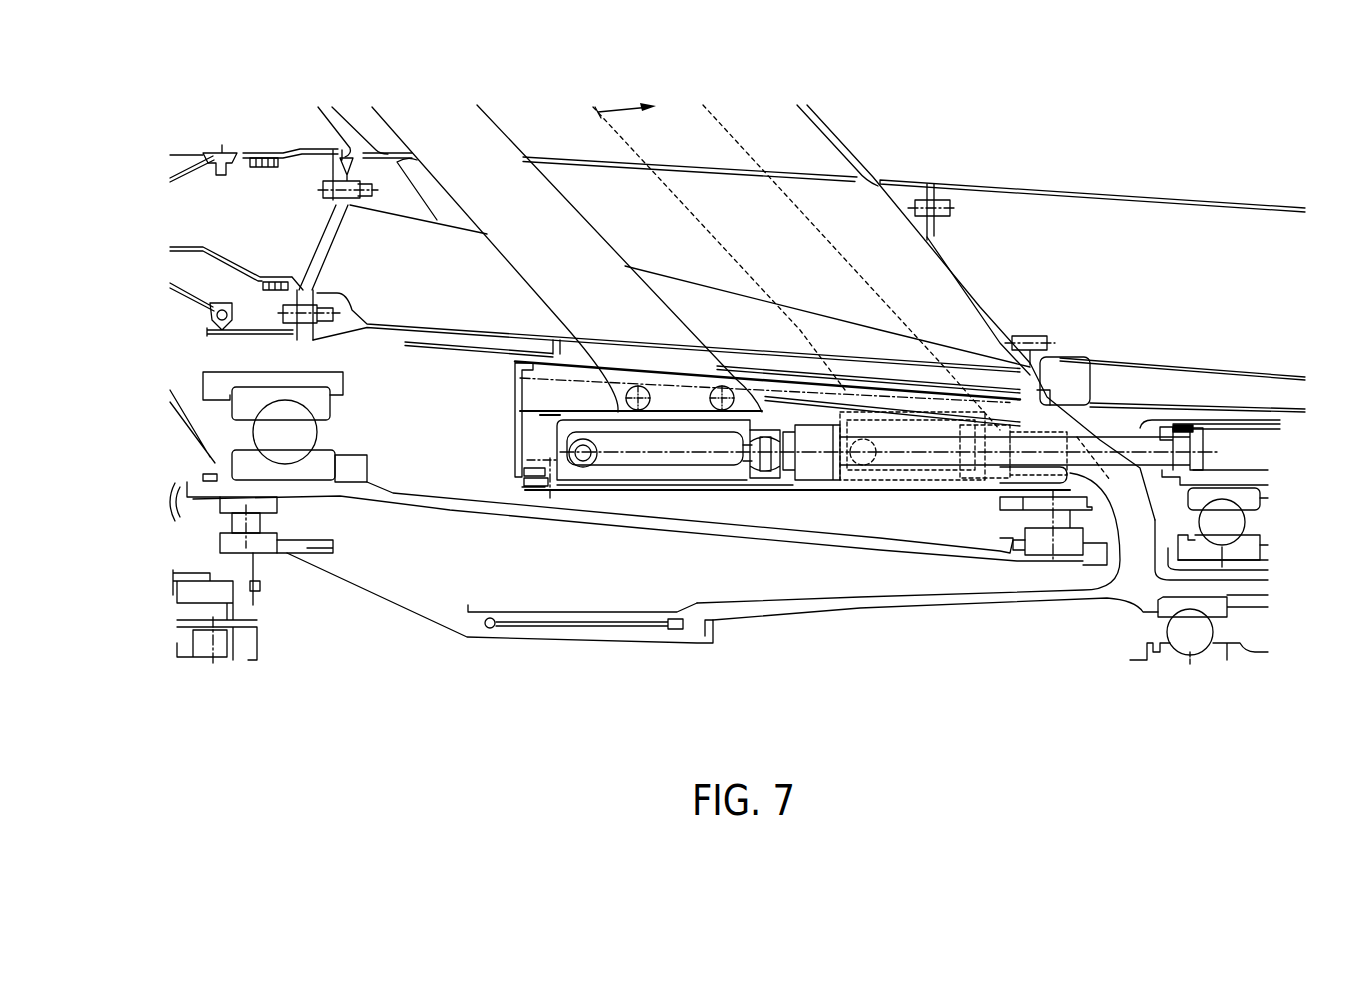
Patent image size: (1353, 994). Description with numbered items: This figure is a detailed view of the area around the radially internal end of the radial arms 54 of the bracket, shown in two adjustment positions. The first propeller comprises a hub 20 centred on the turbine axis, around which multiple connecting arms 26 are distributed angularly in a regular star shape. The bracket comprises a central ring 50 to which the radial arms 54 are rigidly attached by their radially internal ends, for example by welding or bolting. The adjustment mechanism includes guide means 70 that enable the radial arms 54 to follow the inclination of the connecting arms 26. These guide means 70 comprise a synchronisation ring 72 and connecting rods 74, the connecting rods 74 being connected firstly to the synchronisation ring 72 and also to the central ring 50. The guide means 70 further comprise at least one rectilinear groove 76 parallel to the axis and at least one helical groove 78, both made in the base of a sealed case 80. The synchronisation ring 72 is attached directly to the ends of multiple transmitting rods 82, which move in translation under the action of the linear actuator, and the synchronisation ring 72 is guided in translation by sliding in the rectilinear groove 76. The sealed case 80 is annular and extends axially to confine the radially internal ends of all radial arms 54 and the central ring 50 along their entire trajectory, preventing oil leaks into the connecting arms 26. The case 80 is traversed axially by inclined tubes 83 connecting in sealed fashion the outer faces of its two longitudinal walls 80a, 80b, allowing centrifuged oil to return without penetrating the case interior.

The hub 20 is at (617, 620).
The connecting arms 26 is at (860, 168).
The central ring 50 is at (522, 487).
The radial arms 54 is at (462, 143).
The guide means 70 is at (721, 500).
The synchronisation ring 72 is at (800, 482).
The connecting rods 74 is at (653, 470).
The rectilinear groove 76 is at (827, 487).
The helical groove 78 is at (617, 483).
The sealed case 80 is at (488, 427).
The longitudinal wall 80a is at (1103, 470).
The longitudinal wall 80b is at (515, 458).
The transmitting rods 82 is at (1120, 452).
The tubes 83 is at (757, 370).